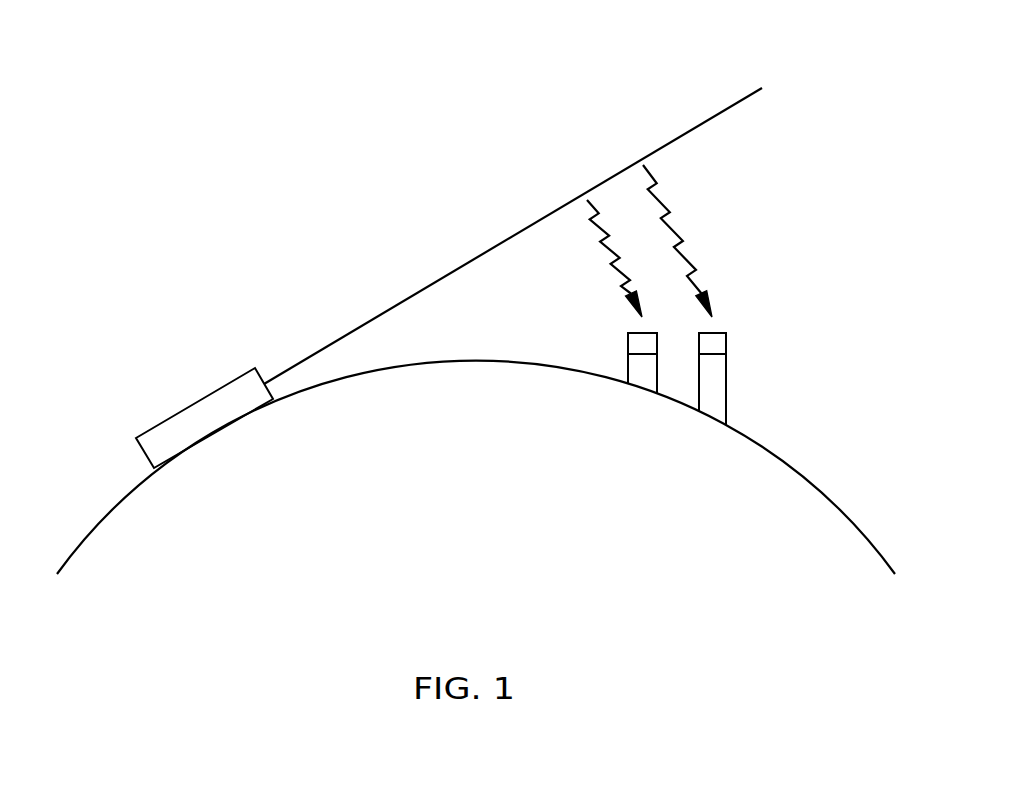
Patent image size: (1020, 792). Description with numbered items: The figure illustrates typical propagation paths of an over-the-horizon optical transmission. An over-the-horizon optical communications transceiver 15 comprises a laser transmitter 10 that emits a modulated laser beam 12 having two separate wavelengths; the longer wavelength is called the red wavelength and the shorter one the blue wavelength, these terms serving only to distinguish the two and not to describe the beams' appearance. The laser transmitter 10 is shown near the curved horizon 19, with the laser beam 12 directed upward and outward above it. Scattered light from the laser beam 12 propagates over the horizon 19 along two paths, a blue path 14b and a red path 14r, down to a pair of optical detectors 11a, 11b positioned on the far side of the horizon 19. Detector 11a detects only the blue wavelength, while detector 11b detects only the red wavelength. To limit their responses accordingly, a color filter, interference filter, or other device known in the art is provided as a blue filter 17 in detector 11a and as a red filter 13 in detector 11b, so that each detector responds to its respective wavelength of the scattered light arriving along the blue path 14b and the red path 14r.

The over-the-horizon optical communications transceiver 15 is at (434, 32).
The modulated laser beam 12 is at (448, 275).
The laser transmitter 10 is at (225, 398).
The horizon 19 is at (380, 372).
The blue path 14b is at (588, 212).
The red path 14r is at (678, 228).
The blue filter 17 is at (643, 343).
The red filter 13 is at (713, 343).
The optical detector 11a is at (645, 373).
The optical detector 11b is at (715, 395).